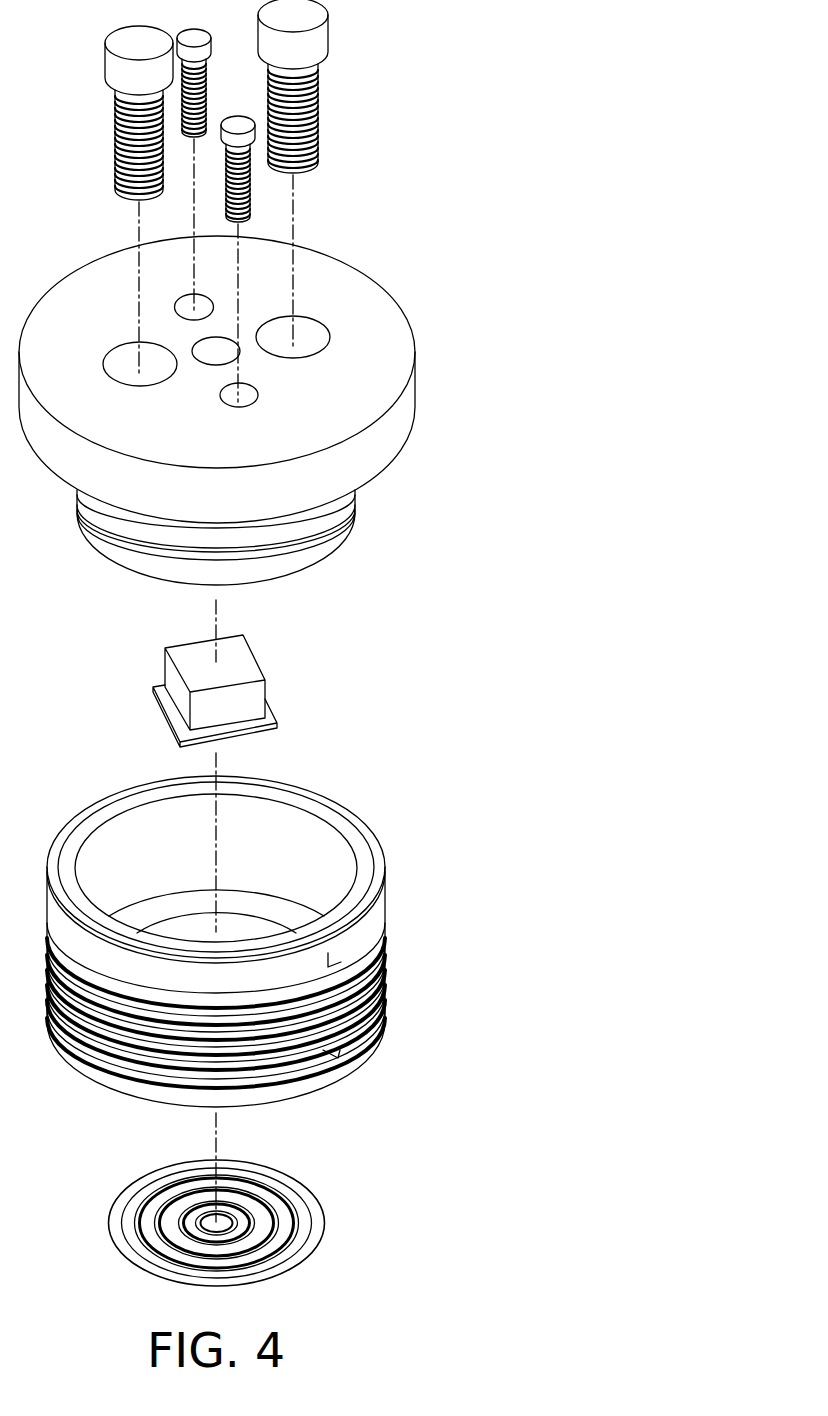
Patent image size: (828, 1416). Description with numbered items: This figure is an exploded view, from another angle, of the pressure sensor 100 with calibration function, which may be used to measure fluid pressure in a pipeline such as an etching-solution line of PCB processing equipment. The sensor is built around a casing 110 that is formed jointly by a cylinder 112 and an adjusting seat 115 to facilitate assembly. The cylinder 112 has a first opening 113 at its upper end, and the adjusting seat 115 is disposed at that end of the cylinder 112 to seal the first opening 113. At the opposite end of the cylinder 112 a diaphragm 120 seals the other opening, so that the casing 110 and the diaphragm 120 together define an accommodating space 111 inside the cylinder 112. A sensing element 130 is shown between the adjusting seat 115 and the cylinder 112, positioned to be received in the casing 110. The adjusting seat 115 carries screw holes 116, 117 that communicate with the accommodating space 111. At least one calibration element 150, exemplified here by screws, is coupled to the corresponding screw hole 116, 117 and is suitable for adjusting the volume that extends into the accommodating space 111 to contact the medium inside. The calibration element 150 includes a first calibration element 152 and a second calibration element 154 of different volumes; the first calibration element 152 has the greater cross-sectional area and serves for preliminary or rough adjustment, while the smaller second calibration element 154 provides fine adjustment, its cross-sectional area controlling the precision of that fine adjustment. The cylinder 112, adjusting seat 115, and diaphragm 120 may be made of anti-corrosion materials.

The pressure sensor 100 is at (273, 645).
The casing 110 is at (273, 729).
The accommodating space 111 is at (271, 876).
The cylinder 112 is at (274, 941).
The first opening 113 is at (296, 852).
The adjusting seat 115 is at (273, 410).
The screw hole 116 is at (307, 330).
The screw hole 117 is at (248, 389).
The diaphragm 120 is at (317, 1205).
The sensing element 130 is at (266, 647).
The calibration element 150 is at (271, 201).
The first calibration element 152 is at (320, 90).
The second calibration element 154 is at (252, 202).